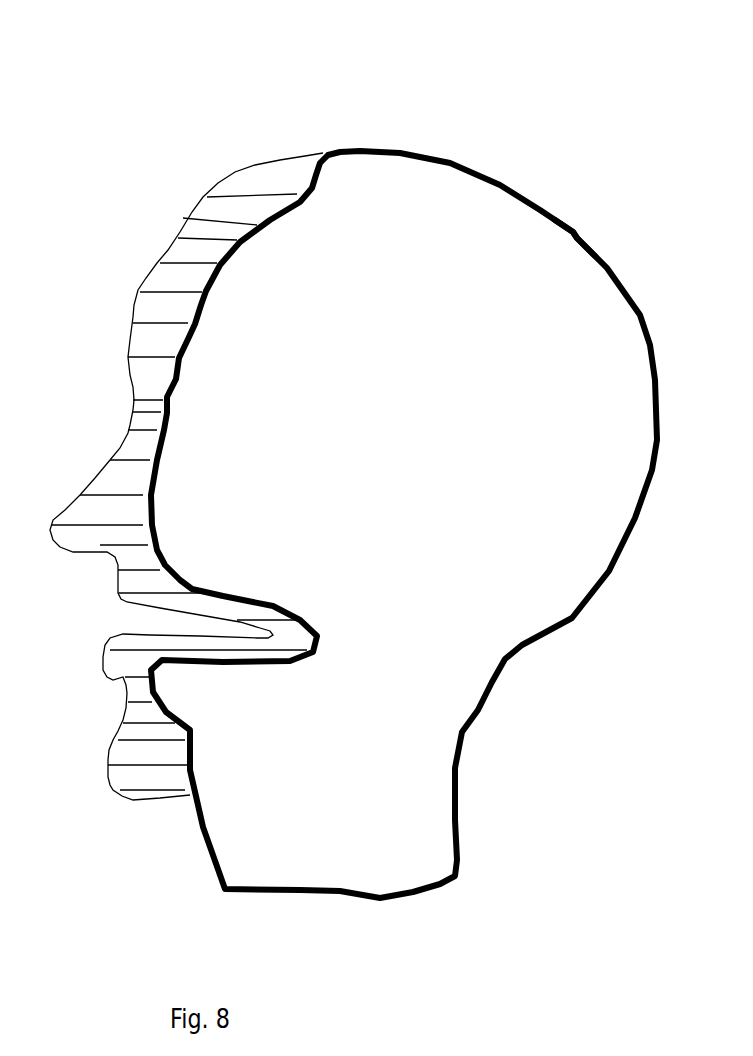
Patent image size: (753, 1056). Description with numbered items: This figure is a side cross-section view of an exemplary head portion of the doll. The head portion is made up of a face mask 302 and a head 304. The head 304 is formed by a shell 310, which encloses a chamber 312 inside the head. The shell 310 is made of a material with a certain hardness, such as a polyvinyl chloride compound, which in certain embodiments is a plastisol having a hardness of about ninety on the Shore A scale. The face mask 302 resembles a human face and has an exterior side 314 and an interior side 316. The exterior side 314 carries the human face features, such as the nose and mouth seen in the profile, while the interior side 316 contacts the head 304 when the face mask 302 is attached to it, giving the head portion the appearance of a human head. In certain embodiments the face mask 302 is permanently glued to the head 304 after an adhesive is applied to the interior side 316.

The face mask 302 is at (190, 213).
The head 304 is at (427, 155).
The shell 310 is at (593, 262).
The chamber 312 is at (550, 405).
The exterior side 314 is at (128, 317).
The interior side 316 is at (133, 410).